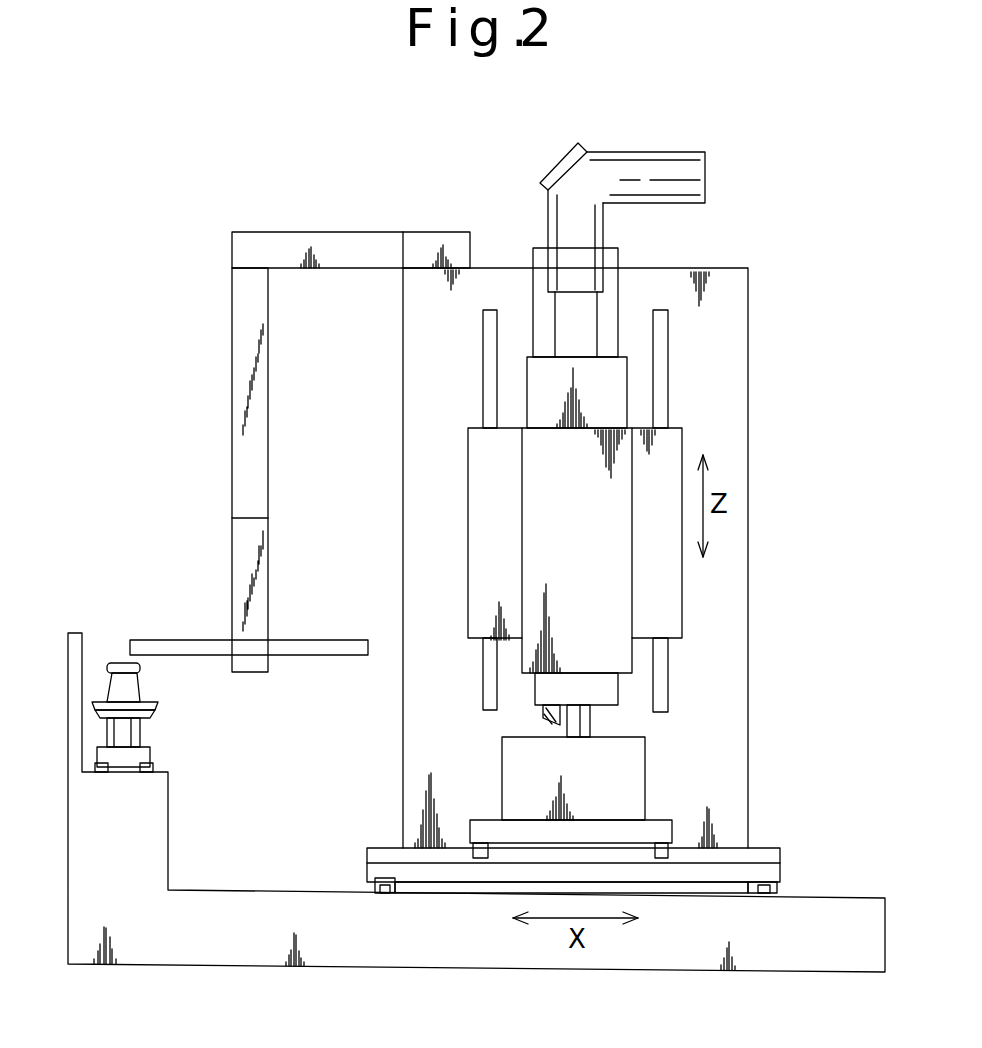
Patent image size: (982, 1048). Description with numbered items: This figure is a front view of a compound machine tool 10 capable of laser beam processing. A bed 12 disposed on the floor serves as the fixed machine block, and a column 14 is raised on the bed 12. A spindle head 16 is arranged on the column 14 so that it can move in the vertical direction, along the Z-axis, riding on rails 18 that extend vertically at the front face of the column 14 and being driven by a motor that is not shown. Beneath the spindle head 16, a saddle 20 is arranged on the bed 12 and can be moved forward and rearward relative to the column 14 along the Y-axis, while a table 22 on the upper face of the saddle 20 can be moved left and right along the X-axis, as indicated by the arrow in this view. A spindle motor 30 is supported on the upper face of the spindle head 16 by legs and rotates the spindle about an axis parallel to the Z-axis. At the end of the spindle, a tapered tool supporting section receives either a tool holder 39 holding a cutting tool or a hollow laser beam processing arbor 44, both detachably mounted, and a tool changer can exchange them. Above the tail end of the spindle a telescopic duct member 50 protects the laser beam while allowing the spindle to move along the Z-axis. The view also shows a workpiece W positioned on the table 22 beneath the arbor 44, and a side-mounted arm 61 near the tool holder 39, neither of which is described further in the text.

The compound machine tool 10 is at (487, 170).
The bed 12 is at (410, 955).
The column 14 is at (737, 352).
The spindle head 16 is at (670, 612).
The rails 18 is at (667, 673).
The saddle 20 is at (773, 877).
The table 22 is at (665, 833).
The spindle motor 30 is at (608, 312).
The tool holder 39 is at (140, 726).
The laser beam processing arbor 44 is at (590, 717).
The duct member 50 is at (678, 198).
The arm 61 is at (243, 330).
The workpiece W is at (632, 778).